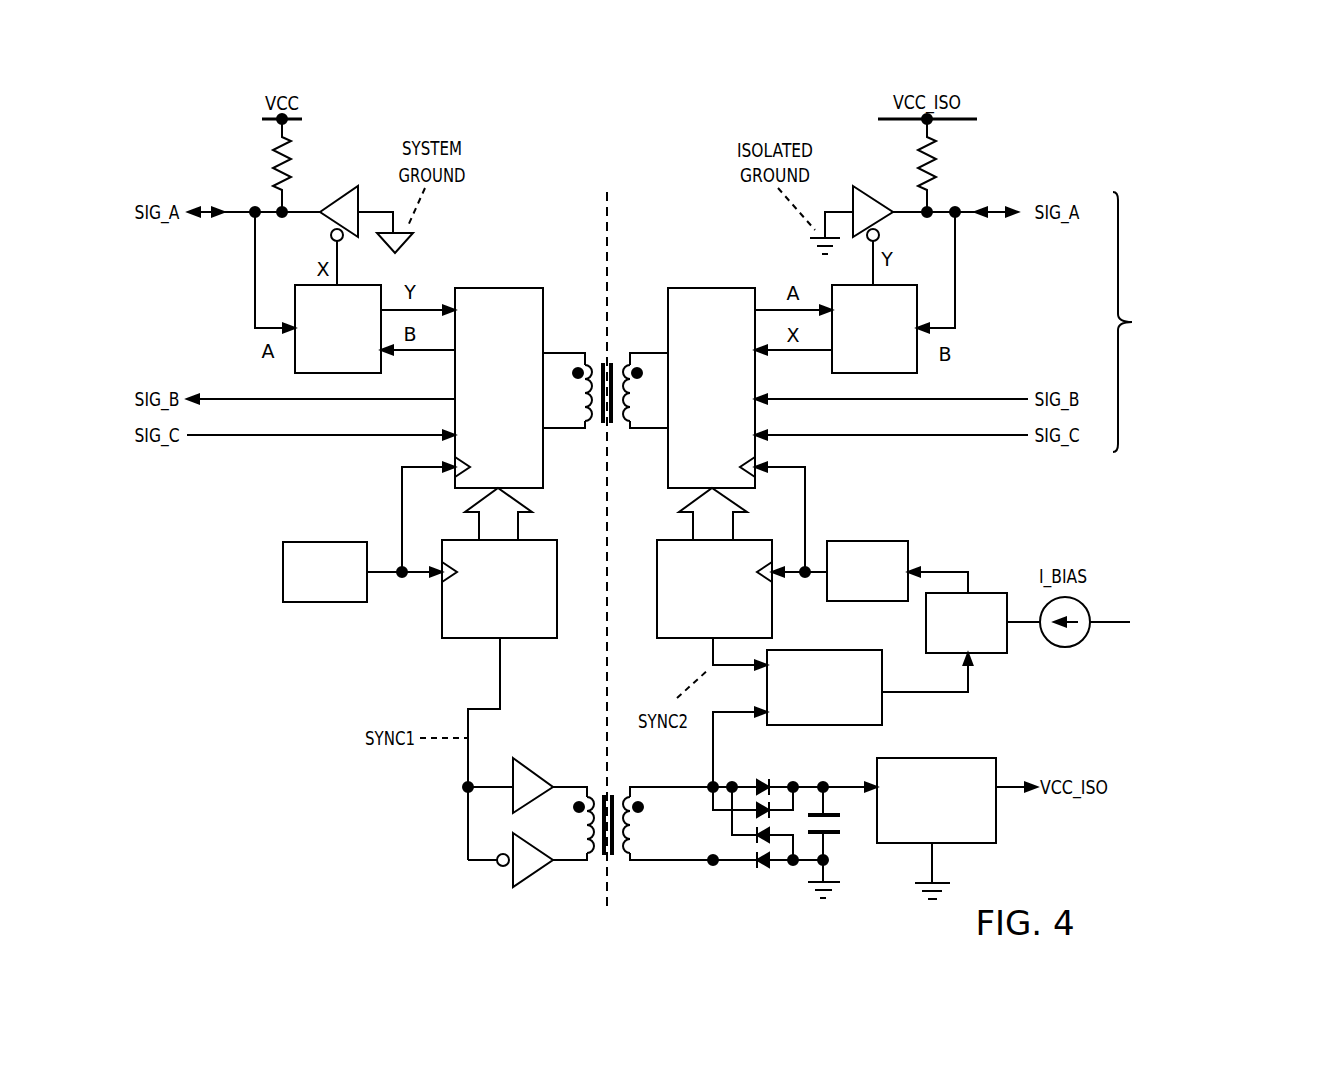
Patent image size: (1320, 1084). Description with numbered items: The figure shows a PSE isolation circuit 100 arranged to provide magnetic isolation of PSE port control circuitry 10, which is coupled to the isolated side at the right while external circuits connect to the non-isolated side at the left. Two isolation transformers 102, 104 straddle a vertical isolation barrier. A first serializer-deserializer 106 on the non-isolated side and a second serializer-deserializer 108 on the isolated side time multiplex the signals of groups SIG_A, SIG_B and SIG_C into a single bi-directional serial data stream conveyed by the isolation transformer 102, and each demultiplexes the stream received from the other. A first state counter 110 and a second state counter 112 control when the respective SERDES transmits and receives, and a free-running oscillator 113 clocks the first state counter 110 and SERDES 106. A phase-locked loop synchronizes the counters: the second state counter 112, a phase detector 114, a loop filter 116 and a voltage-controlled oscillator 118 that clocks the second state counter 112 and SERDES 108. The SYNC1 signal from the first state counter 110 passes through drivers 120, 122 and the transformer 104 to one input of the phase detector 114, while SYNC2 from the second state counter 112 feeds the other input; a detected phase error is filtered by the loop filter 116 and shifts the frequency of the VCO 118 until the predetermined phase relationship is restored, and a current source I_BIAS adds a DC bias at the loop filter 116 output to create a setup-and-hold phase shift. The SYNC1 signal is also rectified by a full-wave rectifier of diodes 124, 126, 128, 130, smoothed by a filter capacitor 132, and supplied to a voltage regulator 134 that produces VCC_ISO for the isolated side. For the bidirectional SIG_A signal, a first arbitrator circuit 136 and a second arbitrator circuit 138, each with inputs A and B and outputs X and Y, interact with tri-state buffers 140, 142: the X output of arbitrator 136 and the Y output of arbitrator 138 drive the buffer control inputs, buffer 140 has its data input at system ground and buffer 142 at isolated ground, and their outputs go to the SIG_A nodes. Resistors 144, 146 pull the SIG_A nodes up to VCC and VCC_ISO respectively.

The PSE port control circuitry 10 is at (1207, 258).
The PSE isolation circuit 100 is at (522, 130).
The isolation transformer 102 is at (603, 355).
The isolation transformer 104 is at (604, 795).
The first serializer-deserializer 106 is at (500, 288).
The second serializer-deserializer 108 is at (715, 288).
The first state counter 110 is at (557, 583).
The second state counter 112 is at (772, 603).
The free-running oscillator 113 is at (330, 542).
The phase detector 114 is at (850, 650).
The loop filter 116 is at (985, 593).
The voltage-controlled oscillator 118 is at (870, 541).
The driver 120 is at (527, 763).
The driver 122 is at (533, 873).
The diode 124 is at (761, 778).
The diode 126 is at (773, 802).
The diode 128 is at (752, 843).
The diode 130 is at (766, 872).
The filter capacitor 132 is at (843, 835).
The voltage regulator 134 is at (955, 758).
The first arbitrator circuit 136 is at (365, 285).
The second arbitrator circuit 138 is at (905, 285).
The tri-state buffer 140 is at (343, 194).
The tri-state buffer 142 is at (870, 190).
The resistor 144 is at (270, 170).
The resistor 146 is at (940, 172).